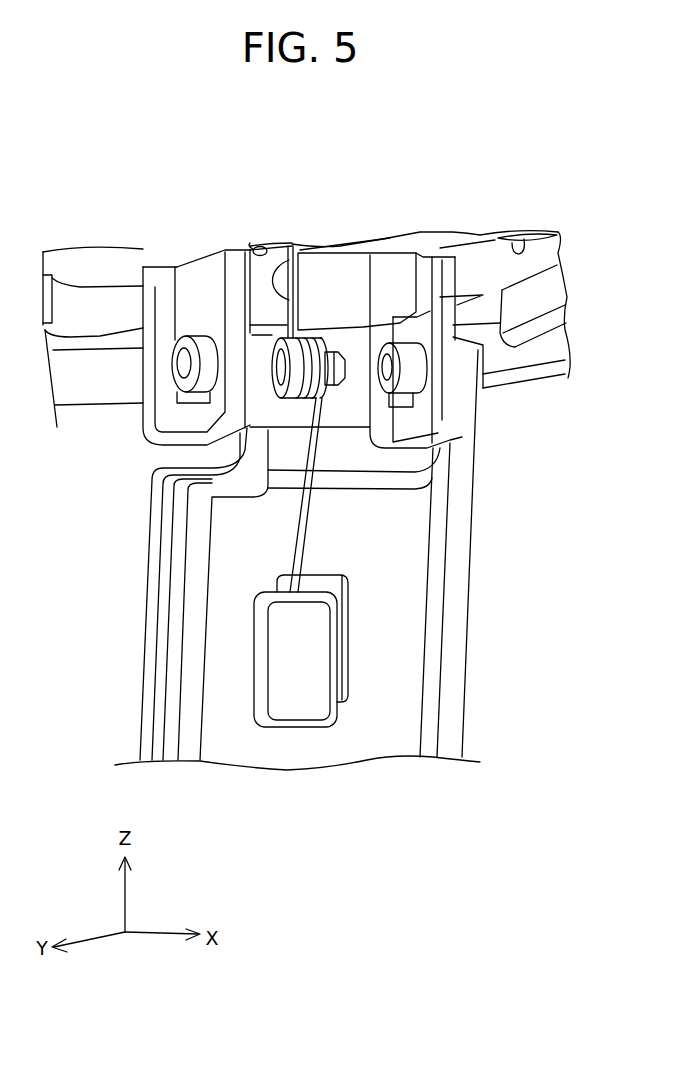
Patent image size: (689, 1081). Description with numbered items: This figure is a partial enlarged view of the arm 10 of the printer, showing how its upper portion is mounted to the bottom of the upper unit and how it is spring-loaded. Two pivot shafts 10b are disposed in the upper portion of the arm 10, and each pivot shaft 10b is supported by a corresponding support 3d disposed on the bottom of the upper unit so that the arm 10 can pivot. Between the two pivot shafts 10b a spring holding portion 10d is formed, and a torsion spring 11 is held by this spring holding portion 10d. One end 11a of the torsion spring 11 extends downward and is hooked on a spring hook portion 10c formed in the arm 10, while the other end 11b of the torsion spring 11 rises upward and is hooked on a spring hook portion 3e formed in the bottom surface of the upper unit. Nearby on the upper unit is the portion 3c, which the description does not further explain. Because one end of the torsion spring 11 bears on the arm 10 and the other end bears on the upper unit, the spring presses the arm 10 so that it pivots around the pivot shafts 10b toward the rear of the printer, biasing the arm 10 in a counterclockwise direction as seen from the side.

The end portion of rail 3c is at (525, 247).
The support 3d is at (200, 289).
The spring hook portion 3e is at (254, 247).
The arm 10 is at (455, 614).
The pivot shaft 10b is at (183, 362).
The spring hook portion 10c is at (308, 653).
The spring holding portion 10d is at (344, 370).
The torsion spring 11 is at (313, 402).
The one end of the torsion spring 11a is at (320, 513).
The other end of the torsion spring 11b is at (294, 243).